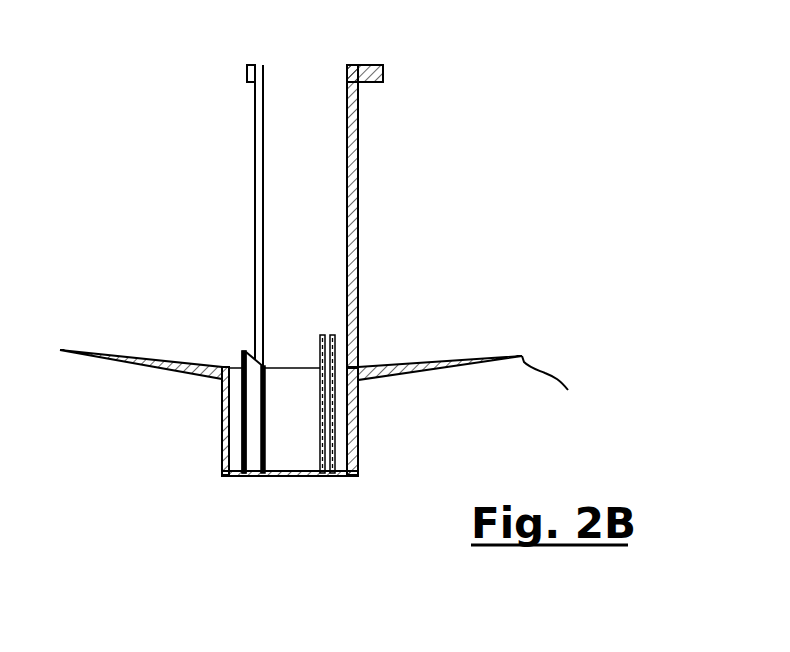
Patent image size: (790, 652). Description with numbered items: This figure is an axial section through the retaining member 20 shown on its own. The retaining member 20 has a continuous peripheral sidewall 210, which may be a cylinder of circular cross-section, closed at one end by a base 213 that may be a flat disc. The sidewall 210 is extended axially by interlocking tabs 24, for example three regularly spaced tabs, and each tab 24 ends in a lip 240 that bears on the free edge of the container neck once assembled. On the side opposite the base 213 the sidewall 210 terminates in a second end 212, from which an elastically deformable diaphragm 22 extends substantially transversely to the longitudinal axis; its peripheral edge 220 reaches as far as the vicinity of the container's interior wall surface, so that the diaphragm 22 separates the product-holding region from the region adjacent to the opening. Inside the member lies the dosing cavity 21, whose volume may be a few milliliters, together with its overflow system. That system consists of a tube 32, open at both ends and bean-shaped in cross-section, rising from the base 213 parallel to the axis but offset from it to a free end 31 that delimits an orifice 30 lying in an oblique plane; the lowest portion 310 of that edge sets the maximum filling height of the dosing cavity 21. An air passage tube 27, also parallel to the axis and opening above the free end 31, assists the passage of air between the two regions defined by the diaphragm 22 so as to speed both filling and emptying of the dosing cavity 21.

The retaining member 20 is at (397, 166).
The dosing cavity 21 is at (295, 408).
The diaphragm 22 is at (430, 361).
The interlocking tab 24 is at (350, 147).
The air passage tube 27 is at (352, 342).
The orifice 30 is at (247, 350).
The free end 31 is at (241, 354).
The tube 32 is at (240, 441).
The sidewall 210 is at (360, 431).
The second end 212 is at (229, 367).
The base 213 is at (291, 477).
The peripheral edge 220 is at (571, 391).
The lip 240 is at (252, 65).
The lowest portion 310 is at (258, 360).